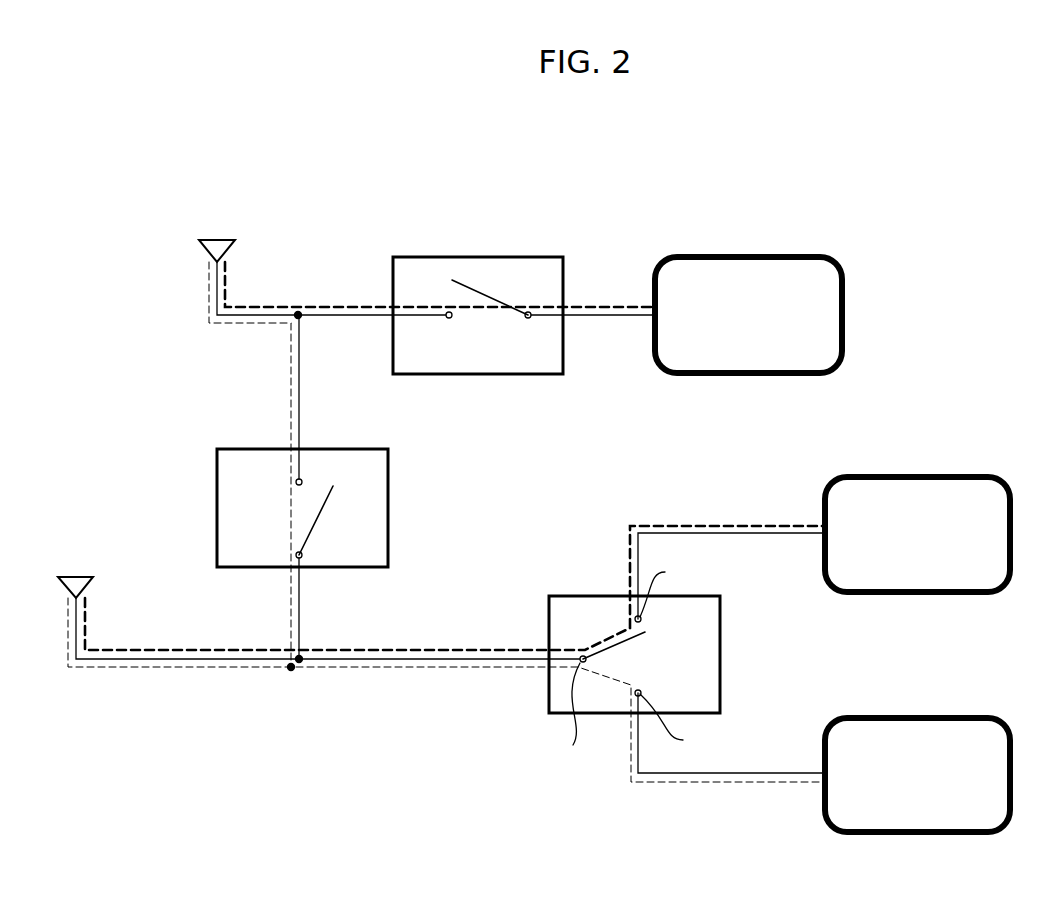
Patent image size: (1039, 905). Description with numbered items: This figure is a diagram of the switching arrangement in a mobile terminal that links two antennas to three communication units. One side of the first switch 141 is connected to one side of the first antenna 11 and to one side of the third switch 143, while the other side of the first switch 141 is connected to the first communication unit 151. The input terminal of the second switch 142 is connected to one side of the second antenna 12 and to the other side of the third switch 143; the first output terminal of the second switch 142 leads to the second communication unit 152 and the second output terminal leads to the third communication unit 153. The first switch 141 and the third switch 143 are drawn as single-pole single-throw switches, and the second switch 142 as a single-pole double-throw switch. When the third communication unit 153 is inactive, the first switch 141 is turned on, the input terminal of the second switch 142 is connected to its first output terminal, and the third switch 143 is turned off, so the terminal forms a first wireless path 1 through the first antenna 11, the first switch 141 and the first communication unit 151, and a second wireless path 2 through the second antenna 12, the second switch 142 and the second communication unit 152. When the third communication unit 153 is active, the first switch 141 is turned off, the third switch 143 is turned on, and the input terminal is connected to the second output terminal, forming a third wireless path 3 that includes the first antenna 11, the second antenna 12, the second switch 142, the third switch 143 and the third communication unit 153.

The first antenna 11 is at (216, 238).
The second antenna 12 is at (74, 576).
The first wireless path 1 is at (302, 304).
The second wireless path 2 is at (438, 648).
The third wireless path 3 is at (359, 670).
The first switch 141 is at (476, 256).
The second switch 142 is at (549, 596).
The third switch 143 is at (216, 508).
The first communication unit 151 is at (745, 257).
The second communication unit 152 is at (915, 477).
The third communication unit 153 is at (916, 718).